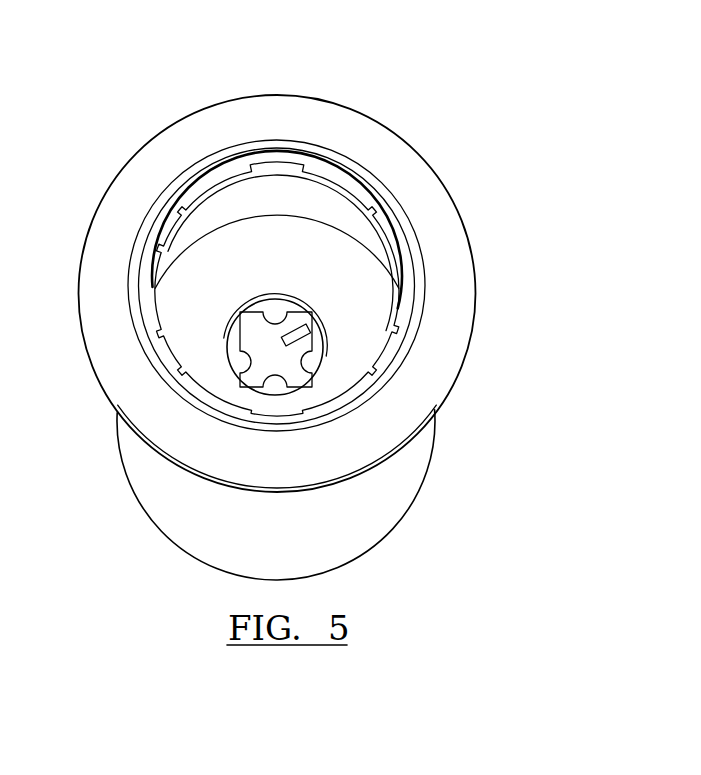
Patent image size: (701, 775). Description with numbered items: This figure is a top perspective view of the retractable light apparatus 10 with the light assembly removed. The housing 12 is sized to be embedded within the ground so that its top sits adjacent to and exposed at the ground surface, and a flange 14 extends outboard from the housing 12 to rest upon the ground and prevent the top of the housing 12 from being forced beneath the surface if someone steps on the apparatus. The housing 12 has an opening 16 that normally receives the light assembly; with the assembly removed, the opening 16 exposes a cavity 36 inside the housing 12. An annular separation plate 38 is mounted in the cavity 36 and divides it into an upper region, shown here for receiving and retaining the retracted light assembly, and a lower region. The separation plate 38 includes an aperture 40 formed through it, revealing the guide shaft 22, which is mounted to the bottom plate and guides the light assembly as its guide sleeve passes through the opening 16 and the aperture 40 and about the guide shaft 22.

The retractable light apparatus 10 is at (392, 76).
The housing 12 is at (468, 362).
The flange 14 is at (443, 408).
The opening 16 is at (377, 183).
The guide shaft 22 is at (258, 349).
The cavity 36 is at (366, 234).
The annular separation plate 38 is at (377, 308).
The aperture 40 is at (257, 310).